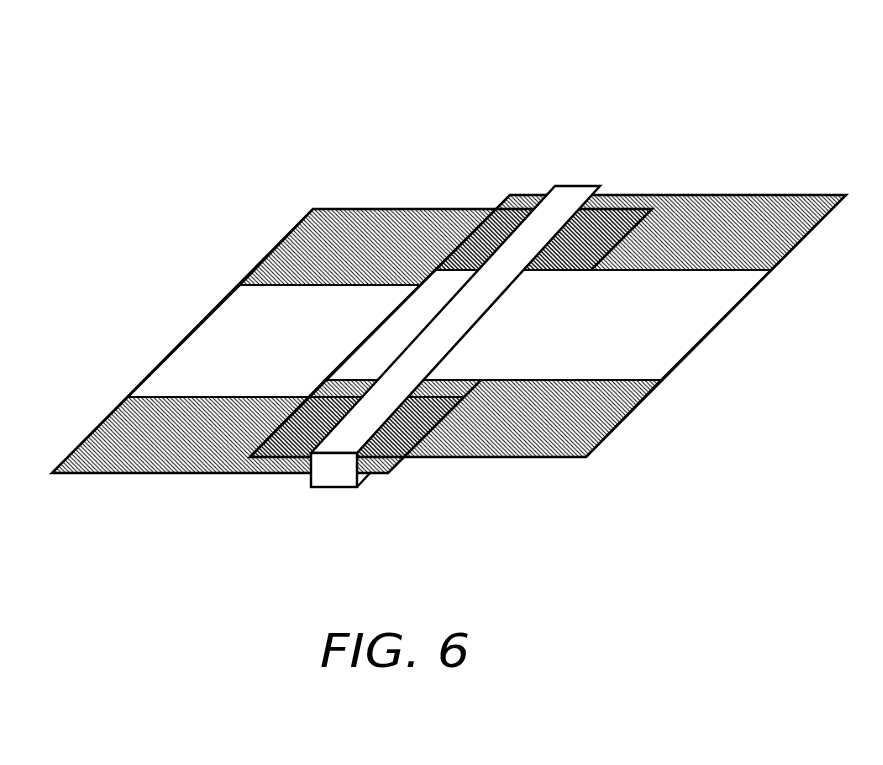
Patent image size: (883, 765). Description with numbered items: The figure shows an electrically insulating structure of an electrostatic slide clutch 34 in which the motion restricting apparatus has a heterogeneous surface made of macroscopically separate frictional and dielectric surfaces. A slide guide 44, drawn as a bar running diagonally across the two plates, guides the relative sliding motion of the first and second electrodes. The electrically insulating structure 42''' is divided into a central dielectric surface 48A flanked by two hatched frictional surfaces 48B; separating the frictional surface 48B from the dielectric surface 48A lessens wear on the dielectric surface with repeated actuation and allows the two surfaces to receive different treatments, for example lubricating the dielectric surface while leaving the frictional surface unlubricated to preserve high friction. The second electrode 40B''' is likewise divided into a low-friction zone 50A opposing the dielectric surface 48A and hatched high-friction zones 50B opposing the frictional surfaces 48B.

The electrostatic slide clutch 34 is at (455, 273).
The slide guide 44 is at (570, 197).
The first substrate plate 42''' is at (352, 341).
The second electrode 40B''' is at (554, 326).
The dielectric surface 48A is at (300, 348).
The frictional surface 48B is at (397, 253).
The low-friction zone 50A is at (580, 340).
The high-friction zone 50B is at (682, 238).